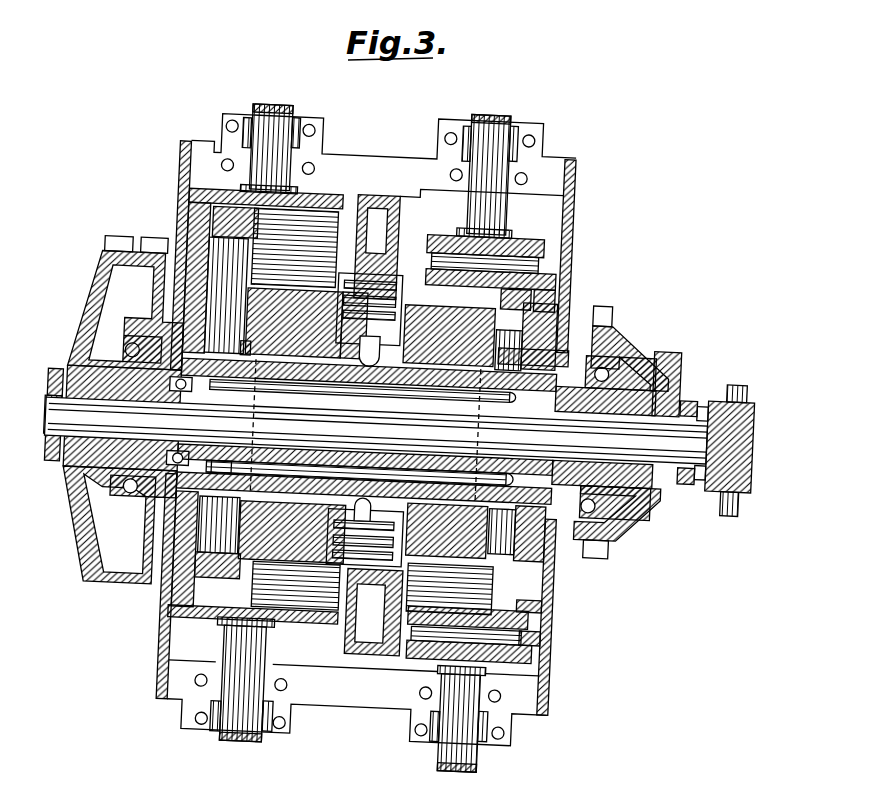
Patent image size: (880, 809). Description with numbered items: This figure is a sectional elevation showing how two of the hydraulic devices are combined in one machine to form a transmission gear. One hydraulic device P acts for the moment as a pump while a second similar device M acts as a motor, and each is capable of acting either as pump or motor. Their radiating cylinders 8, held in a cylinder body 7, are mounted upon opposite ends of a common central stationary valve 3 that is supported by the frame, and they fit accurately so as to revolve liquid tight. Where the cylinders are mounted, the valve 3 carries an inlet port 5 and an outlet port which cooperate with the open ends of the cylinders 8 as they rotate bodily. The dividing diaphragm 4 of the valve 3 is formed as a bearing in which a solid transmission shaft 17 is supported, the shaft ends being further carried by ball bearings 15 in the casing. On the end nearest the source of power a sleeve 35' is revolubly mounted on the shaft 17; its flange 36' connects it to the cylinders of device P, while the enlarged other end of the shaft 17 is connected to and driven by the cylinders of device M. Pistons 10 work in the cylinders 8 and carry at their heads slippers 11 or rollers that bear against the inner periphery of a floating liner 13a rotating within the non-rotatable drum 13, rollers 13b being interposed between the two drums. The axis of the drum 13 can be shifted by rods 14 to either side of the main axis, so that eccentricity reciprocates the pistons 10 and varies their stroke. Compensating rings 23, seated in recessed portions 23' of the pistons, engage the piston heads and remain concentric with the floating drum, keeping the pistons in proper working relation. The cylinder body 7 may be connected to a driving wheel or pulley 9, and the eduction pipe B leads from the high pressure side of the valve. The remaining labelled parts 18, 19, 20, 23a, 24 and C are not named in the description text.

The stationary valve 3 is at (368, 433).
The diaphragm 4 is at (366, 431).
The inlet port 5 is at (252, 351).
The cylinder body 7 is at (156, 296).
The cylinders 8 is at (505, 442).
The driving wheel or pulley 9 is at (70, 320).
The pistons 10 is at (260, 256).
The slippers 11 is at (195, 190).
The ring or drum 13 is at (310, 190).
The floating liner or inner drum 13a is at (530, 268).
The rollers 13b is at (428, 246).
The rods 14 is at (271, 110).
The ball bearings 15 is at (120, 345).
The transmission shaft 17 is at (376, 430).
The inner sleeve 18 is at (358, 432).
The end coupling 19 is at (735, 462).
The spring mechanism 20 is at (355, 280).
The compensating rings 23 is at (430, 413).
The upper casing wall 23a is at (160, 195).
The recessed portions 23' is at (149, 585).
The section line 24 is at (351, 430).
The sleeve 35' is at (694, 425).
The flange 36' is at (615, 540).
The eduction pipe B is at (250, 358).
The piston C is at (224, 395).
The hydraulic device acting as motor M is at (245, 740).
The hydraulic device acting as pump P is at (458, 730).